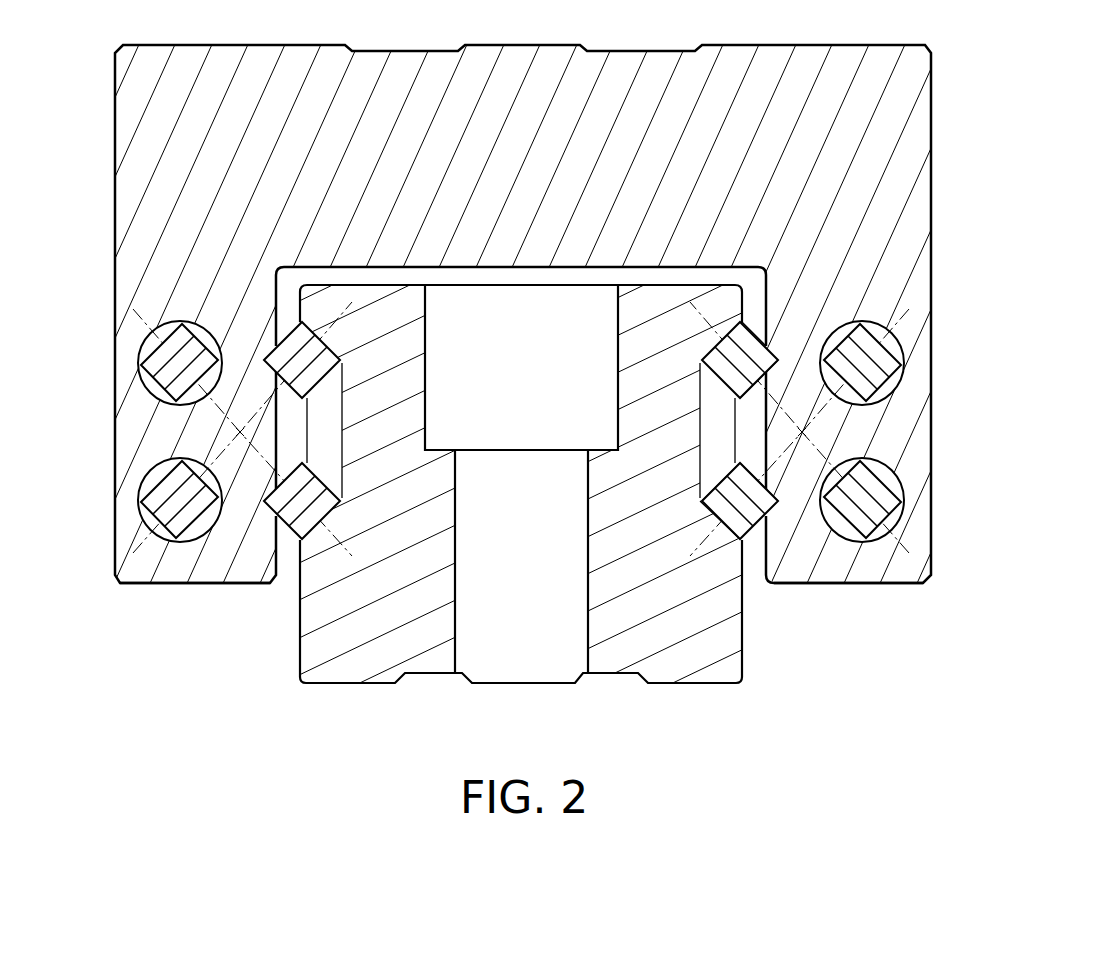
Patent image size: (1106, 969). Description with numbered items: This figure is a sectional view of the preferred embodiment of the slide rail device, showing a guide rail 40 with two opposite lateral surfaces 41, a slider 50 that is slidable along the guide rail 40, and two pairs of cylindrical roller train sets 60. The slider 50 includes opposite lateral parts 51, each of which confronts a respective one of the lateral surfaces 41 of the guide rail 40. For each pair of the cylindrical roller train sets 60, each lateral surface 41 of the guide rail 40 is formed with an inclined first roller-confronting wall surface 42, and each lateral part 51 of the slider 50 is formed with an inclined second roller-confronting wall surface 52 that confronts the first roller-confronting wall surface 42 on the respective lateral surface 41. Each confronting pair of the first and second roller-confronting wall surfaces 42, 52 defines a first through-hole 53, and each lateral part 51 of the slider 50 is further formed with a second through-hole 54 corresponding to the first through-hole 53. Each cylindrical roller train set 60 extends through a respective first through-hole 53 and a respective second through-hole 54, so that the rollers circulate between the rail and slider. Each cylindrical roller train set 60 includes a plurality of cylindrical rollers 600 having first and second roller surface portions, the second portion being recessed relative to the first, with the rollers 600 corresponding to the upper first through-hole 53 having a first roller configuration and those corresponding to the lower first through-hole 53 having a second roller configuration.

The guide rail 40 is at (666, 696).
The lateral surfaces 41 is at (742, 642).
The first roller-confronting wall surface 42 is at (697, 522).
The slider 50 is at (950, 111).
The lateral parts 51 is at (865, 570).
The second roller-confronting wall surface 52 is at (770, 485).
The first through-hole 53 is at (782, 508).
The second through-hole 54 is at (902, 514).
The cylindrical roller train sets 60 is at (892, 485).
The cylindrical rollers 600 is at (726, 519).